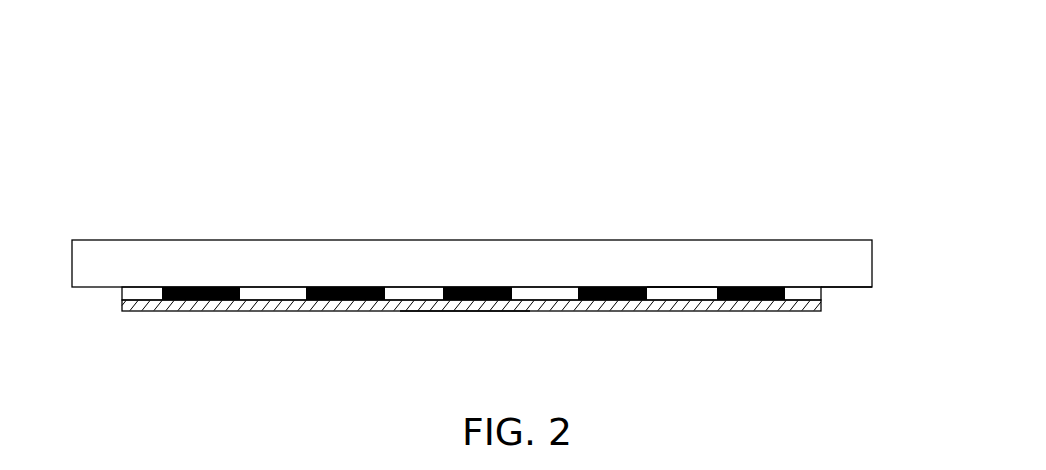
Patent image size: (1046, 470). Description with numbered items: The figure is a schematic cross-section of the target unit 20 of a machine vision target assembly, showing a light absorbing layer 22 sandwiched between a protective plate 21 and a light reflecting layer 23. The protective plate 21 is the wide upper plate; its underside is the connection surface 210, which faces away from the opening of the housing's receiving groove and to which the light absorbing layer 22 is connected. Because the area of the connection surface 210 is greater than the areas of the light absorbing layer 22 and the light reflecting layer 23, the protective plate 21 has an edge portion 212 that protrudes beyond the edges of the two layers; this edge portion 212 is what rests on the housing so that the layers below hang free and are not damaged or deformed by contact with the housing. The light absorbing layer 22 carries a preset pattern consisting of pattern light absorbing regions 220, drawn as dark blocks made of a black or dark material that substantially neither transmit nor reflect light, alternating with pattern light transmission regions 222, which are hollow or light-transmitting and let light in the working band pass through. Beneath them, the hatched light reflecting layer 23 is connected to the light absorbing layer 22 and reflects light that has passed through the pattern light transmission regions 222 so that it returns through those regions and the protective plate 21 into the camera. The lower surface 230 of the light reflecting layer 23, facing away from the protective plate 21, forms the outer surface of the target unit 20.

The target unit 20 is at (541, 92).
The protective plate 21 is at (718, 248).
The connection surface 210 is at (683, 288).
The edge portion 212 is at (852, 280).
The light absorbing layer 22 is at (338, 152).
The pattern light absorbing region 220 is at (185, 287).
The pattern light transmission region 222 is at (290, 292).
The light reflecting layer 23 is at (530, 305).
The surface of the light reflecting layer 230 is at (461, 312).